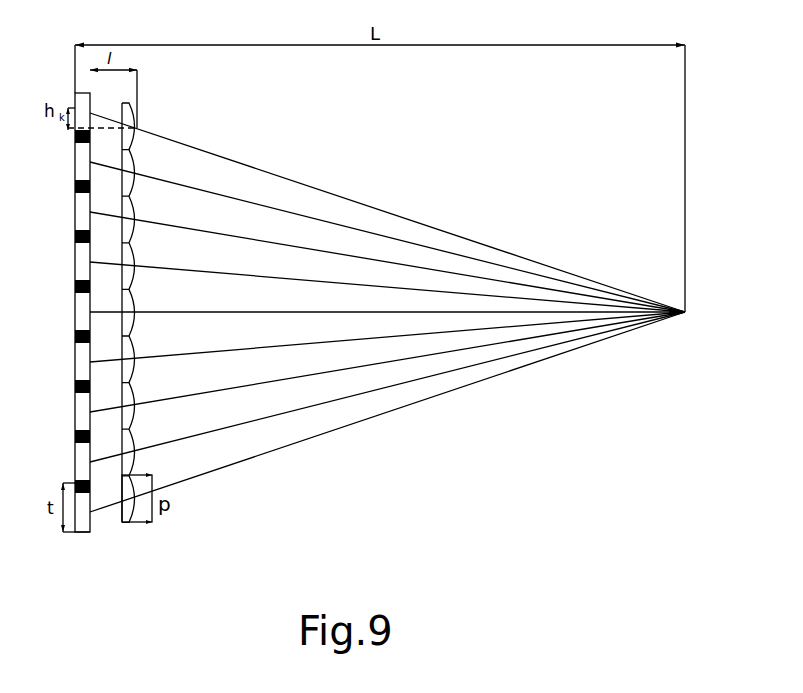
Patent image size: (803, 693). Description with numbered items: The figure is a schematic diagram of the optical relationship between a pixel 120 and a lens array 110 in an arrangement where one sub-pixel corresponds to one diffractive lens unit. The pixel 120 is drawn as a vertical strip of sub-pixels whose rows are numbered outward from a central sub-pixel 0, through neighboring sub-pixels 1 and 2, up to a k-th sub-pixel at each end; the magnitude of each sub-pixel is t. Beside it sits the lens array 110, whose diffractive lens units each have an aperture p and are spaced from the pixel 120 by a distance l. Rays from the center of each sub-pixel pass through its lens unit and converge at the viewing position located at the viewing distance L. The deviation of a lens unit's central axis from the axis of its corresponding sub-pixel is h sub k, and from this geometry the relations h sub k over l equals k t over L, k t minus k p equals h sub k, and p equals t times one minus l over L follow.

The lens array 110 is at (124, 523).
The pixel 120 is at (88, 346).
The central view pixel column 0 is at (83, 311).
The first view pixel column 1 is at (83, 311).
The second view pixel column 2 is at (83, 311).